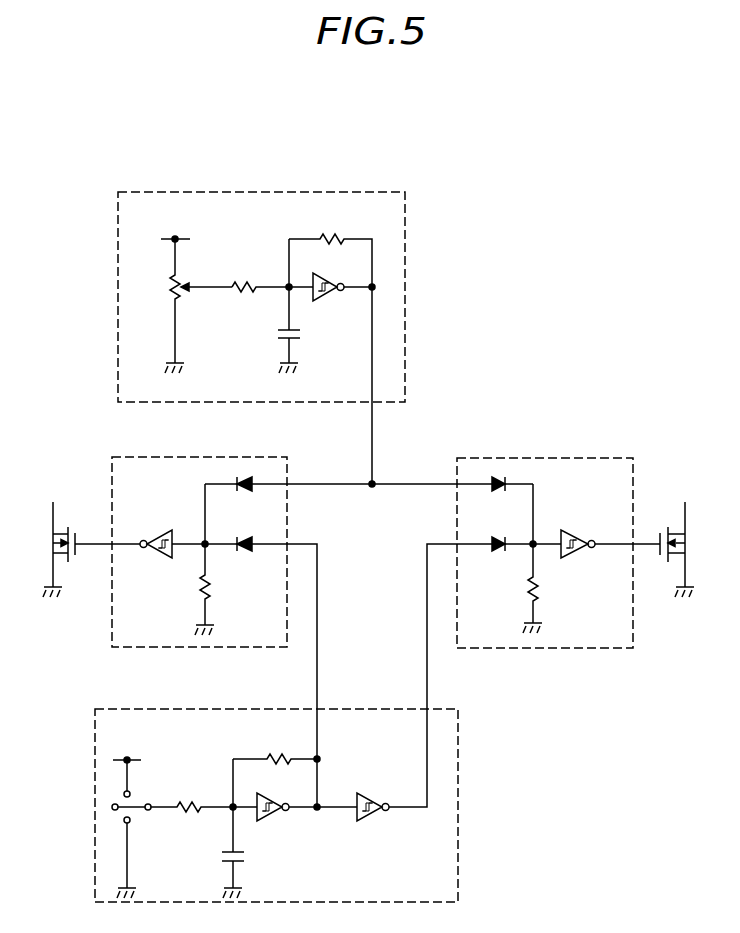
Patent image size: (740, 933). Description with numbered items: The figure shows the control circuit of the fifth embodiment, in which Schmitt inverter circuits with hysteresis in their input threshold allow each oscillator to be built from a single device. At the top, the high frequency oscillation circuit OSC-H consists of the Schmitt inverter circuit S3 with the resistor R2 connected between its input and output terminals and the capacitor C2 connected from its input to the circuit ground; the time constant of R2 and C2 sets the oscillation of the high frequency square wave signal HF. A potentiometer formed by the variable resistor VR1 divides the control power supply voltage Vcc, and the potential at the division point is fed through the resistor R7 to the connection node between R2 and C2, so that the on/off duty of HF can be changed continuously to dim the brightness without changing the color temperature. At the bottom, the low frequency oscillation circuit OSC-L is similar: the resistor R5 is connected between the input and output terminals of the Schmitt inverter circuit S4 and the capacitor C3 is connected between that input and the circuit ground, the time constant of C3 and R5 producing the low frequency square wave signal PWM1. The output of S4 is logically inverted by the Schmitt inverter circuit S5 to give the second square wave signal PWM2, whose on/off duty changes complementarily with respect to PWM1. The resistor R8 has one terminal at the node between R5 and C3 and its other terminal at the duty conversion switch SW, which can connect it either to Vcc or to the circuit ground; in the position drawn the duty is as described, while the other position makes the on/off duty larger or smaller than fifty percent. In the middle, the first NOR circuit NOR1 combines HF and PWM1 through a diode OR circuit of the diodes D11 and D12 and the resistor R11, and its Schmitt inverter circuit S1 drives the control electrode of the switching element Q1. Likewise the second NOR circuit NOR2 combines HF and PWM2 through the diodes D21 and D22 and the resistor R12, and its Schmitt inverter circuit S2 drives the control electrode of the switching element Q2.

The high frequency oscillation circuit OSC-H is at (261, 283).
The low frequency oscillation circuit OSC-L is at (276, 820).
The first NOR circuit NOR1 is at (199, 538).
The second NOR circuit NOR2 is at (545, 539).
The control power supply voltage Vcc is at (154, 488).
The variable resistor VR1 is at (181, 306).
The resistor R7 is at (260, 273).
The resistor R2 is at (330, 248).
The capacitor C2 is at (276, 328).
The Schmitt inverter circuit S3 is at (332, 297).
The high frequency square wave signal HF is at (369, 387).
The diode D11 is at (235, 512).
The diode D12 is at (249, 558).
The resistor R11 is at (191, 589).
The Schmitt inverter circuit S1 is at (140, 532).
The switching element Q1 is at (49, 549).
The diode D21 is at (510, 512).
The diode D22 is at (504, 557).
The resistor R12 is at (552, 588).
The Schmitt inverter circuit S2 is at (596, 534).
The switching element Q2 is at (687, 549).
The low frequency square wave signal PWM1 is at (262, 677).
The second square wave signal PWM2 is at (461, 675).
The duty conversion switch SW is at (141, 829).
The resistor R8 is at (193, 794).
The capacitor C3 is at (219, 828).
The resistor R5 is at (275, 749).
The Schmitt inverter circuit S4 is at (275, 817).
The Schmitt inverter circuit S5 is at (354, 818).